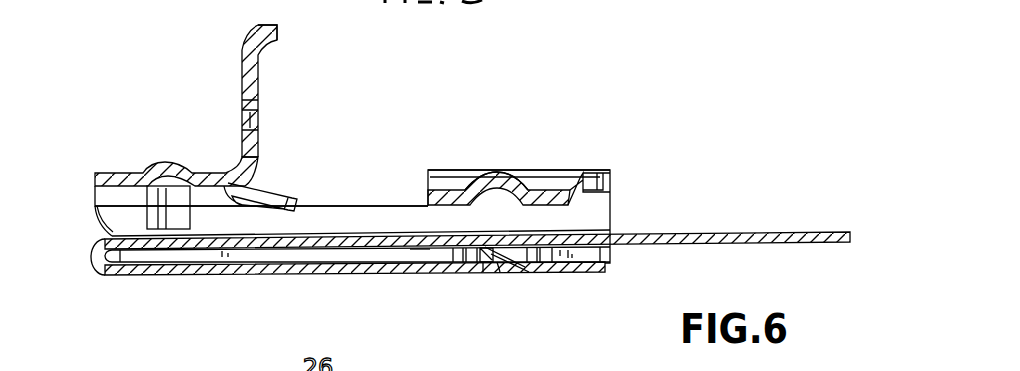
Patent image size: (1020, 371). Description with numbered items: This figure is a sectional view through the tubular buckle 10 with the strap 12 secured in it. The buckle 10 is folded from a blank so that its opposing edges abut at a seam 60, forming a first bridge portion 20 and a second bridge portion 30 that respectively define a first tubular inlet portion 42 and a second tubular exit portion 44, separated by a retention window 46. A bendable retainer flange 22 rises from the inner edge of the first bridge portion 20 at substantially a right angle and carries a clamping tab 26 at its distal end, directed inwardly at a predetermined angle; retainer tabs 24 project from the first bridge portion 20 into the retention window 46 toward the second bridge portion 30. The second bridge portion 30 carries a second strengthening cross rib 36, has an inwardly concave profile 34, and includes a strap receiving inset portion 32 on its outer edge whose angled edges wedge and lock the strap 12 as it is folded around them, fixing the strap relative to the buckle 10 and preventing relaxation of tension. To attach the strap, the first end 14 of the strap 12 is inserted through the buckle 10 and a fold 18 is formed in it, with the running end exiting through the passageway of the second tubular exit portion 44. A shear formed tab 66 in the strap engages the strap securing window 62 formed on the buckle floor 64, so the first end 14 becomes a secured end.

The tubular buckle 10 is at (633, 152).
The strap 12 is at (771, 233).
The first end of the strap 14 is at (330, 276).
The fold 18 is at (92, 263).
The first bridge portion 20 is at (129, 170).
The retainer flange 22 is at (242, 70).
The retainer tabs 24 is at (272, 186).
The clamping tab 26 is at (253, 32).
The second bridge portion 30 is at (538, 178).
The strap receiving inset portion 32 is at (610, 194).
The inwardly concave profile 34 is at (558, 190).
The second strengthening cross rib 36 is at (500, 171).
The first tubular inlet portion 42 is at (93, 186).
The second tubular exit portion 44 is at (611, 253).
The retention window 46 is at (340, 207).
The seam 60 is at (567, 261).
The strap securing window 62 is at (481, 262).
The buckle floor 64 is at (420, 247).
The shear formed tab 66 is at (496, 258).